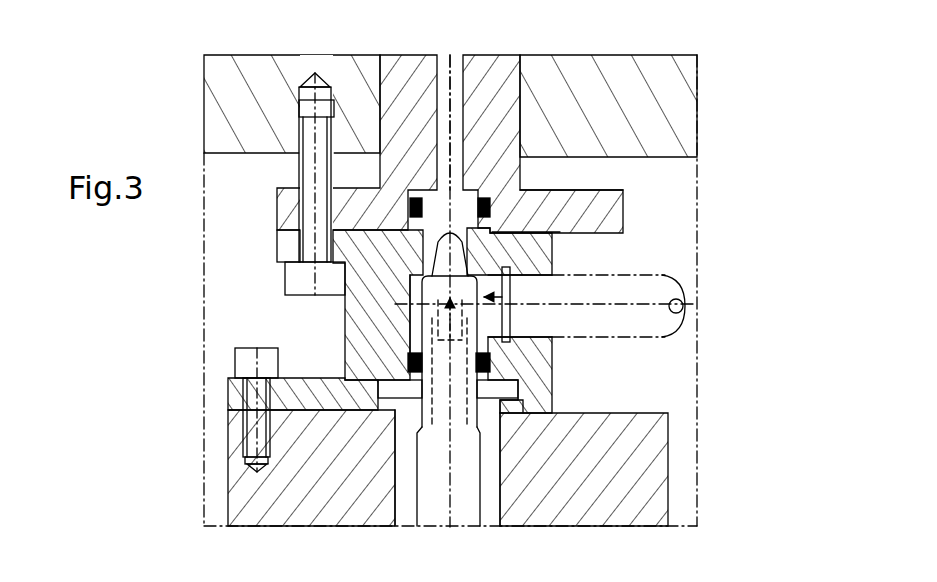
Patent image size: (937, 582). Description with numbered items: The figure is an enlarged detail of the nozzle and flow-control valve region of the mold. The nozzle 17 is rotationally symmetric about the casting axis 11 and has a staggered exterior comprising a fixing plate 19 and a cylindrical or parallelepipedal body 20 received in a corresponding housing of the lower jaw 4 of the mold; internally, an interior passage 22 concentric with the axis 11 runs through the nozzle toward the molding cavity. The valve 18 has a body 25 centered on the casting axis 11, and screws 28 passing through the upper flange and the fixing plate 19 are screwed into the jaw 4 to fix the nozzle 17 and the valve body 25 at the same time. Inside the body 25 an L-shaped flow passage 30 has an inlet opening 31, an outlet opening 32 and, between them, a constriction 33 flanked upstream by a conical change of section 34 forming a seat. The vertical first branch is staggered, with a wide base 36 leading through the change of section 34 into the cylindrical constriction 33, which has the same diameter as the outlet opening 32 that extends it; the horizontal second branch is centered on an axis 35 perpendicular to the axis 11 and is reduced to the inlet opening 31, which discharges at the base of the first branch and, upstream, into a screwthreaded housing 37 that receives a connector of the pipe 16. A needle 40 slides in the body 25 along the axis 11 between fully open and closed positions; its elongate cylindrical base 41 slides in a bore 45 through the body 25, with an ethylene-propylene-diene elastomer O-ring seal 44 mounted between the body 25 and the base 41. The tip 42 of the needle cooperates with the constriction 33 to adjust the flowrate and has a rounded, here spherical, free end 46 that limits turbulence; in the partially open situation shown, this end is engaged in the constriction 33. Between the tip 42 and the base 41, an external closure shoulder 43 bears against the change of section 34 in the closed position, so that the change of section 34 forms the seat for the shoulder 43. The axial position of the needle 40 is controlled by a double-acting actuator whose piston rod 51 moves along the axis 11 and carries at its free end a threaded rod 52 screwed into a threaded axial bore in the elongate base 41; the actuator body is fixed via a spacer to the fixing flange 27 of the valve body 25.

The lower jaw 4 is at (214, 94).
The casting axis 11 is at (451, 510).
The pipe 16 is at (680, 327).
The nozzle 17 is at (632, 200).
The valve 18 is at (338, 322).
The fixing plate 19 is at (624, 223).
The cylindrical or parallelepipedal body 20 is at (514, 84).
The interior passage 22 is at (462, 66).
The body 25 is at (348, 350).
The fixing flange 27 is at (231, 392).
The screws 28 is at (300, 164).
The flow passage 30 is at (511, 292).
The inlet opening 31 is at (528, 333).
The outlet opening 32 is at (484, 192).
The constriction 33 is at (533, 190).
The change of section 34 is at (416, 273).
The axis 35 is at (668, 285).
The wide base 36 is at (418, 318).
The screwthreaded housing 37 is at (548, 328).
The needle 40 is at (508, 418).
The elongate base 41 is at (420, 418).
The tip 42 is at (428, 243).
The closure shoulder 43 is at (526, 215).
The O-ring seal 44 is at (376, 388).
The bore 45 is at (530, 368).
The free end 46 is at (418, 196).
The rod 51 is at (413, 505).
The threaded rod 52 is at (512, 468).